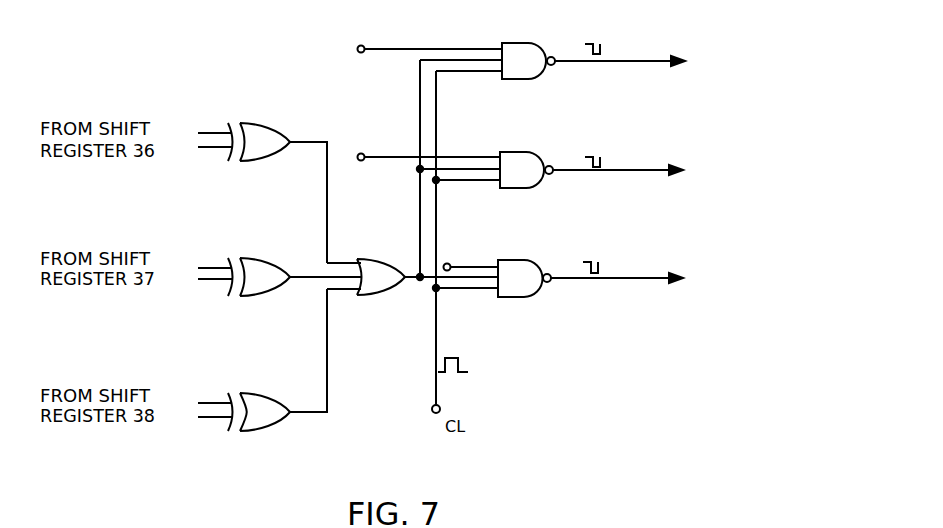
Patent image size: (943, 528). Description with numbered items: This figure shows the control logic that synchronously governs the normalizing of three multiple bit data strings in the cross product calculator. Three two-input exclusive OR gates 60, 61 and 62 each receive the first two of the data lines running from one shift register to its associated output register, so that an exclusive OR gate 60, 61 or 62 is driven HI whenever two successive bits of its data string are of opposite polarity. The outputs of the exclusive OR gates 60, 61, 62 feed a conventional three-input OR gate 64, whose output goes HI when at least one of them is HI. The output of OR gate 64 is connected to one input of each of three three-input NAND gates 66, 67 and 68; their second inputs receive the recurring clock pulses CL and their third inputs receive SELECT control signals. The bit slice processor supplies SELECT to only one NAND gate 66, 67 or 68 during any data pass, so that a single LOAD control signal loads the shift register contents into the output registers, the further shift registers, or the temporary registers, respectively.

The exclusive OR gate 60 is at (252, 162).
The exclusive OR gate 61 is at (252, 296).
The exclusive OR gate 62 is at (252, 431).
The OR gate 64 is at (372, 295).
The NAND gate 66 is at (515, 79).
The NAND gate 67 is at (515, 188).
The NAND gate 68 is at (513, 297).